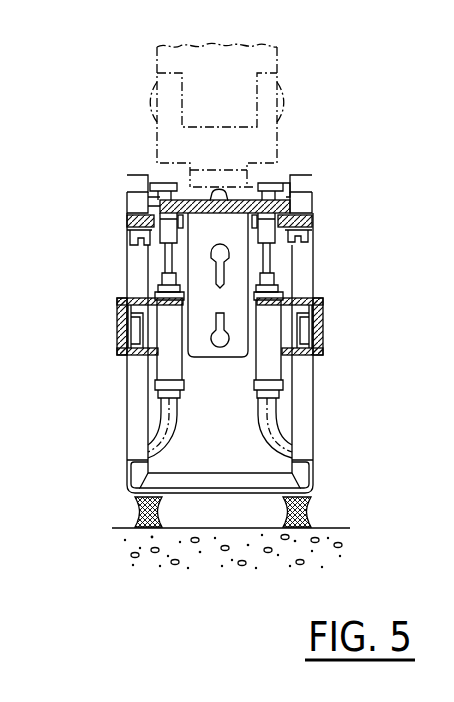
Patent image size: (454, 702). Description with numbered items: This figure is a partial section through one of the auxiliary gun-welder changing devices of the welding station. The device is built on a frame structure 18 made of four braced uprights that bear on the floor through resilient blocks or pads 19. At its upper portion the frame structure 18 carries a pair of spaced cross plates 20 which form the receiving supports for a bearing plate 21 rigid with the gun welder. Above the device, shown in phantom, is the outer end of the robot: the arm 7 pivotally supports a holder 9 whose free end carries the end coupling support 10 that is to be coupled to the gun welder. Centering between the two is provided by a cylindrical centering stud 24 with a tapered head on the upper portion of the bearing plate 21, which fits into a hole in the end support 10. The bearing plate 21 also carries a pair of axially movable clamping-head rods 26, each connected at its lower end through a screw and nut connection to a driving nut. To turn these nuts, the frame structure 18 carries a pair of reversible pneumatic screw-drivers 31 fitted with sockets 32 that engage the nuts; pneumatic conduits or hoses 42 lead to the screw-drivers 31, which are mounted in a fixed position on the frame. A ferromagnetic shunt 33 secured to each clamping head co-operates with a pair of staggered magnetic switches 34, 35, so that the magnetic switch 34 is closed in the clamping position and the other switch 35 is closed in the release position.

The arm 7 is at (272, 62).
The holder 9 is at (282, 120).
The end coupling support 10 is at (258, 180).
The cylindrical centering stud 24 is at (233, 180).
The ferromagnetic shunt 33 is at (160, 183).
The bearing plate 21 is at (290, 206).
The magnetic switch 35 is at (127, 179).
The magnetic switch 34 is at (127, 194).
The clamping-head rod 26 is at (127, 221).
The cross plate 20 is at (313, 223).
The socket 32 is at (168, 232).
The pneumatic screw-driver 31 is at (145, 288).
The frame structure 18 is at (305, 416).
The pneumatic conduit 42 is at (143, 437).
The resilient block 19 is at (308, 507).